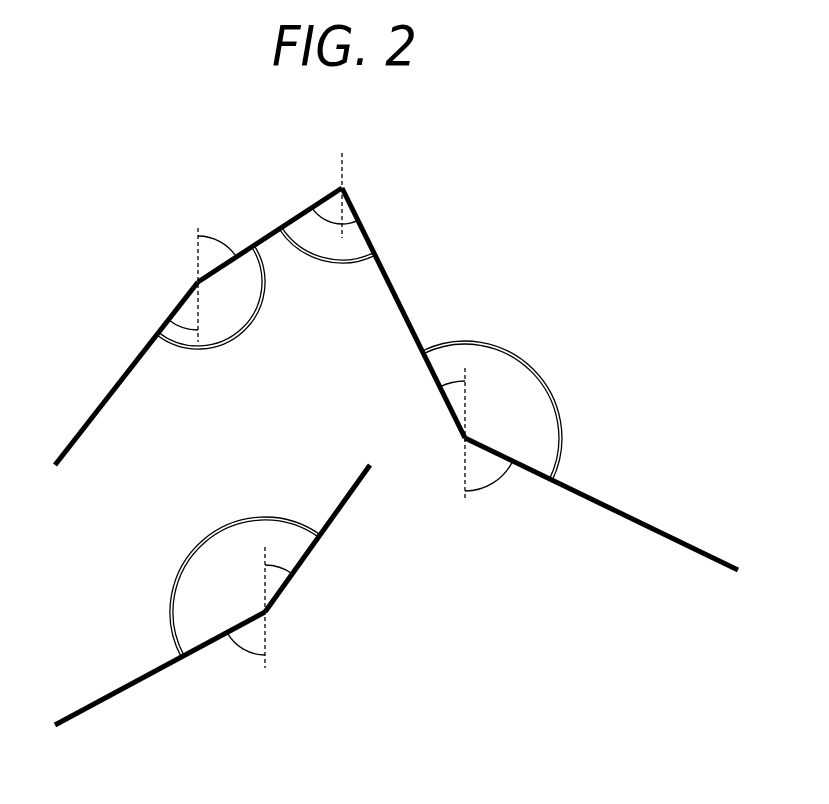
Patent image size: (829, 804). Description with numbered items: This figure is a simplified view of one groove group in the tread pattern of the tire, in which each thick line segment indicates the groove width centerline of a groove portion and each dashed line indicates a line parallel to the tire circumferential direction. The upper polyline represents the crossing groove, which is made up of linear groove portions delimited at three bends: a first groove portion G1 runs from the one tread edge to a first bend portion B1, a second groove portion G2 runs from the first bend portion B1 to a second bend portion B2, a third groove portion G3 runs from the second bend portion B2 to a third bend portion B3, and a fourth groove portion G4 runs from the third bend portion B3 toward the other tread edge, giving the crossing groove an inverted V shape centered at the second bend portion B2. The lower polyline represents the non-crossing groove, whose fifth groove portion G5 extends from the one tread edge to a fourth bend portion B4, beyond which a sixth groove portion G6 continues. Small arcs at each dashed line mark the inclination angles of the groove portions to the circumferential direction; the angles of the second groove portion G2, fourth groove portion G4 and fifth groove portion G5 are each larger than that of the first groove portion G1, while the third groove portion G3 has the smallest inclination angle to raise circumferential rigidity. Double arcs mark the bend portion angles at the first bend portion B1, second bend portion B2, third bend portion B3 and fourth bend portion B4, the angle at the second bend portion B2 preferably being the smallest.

The first groove portion G1 is at (123, 378).
The second groove portion G2 is at (268, 237).
The third groove portion G3 is at (400, 300).
The fourth groove portion G4 is at (628, 512).
The fifth groove portion G5 is at (122, 685).
The sixth groove portion G6 is at (352, 497).
The first bend portion B1 is at (197, 279).
The second bend portion B2 is at (344, 187).
The third bend portion B3 is at (462, 440).
The fourth bend portion B4 is at (267, 613).